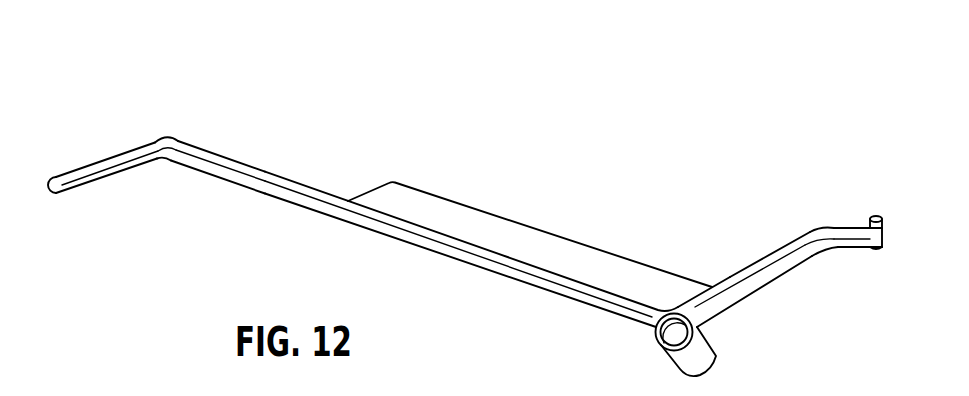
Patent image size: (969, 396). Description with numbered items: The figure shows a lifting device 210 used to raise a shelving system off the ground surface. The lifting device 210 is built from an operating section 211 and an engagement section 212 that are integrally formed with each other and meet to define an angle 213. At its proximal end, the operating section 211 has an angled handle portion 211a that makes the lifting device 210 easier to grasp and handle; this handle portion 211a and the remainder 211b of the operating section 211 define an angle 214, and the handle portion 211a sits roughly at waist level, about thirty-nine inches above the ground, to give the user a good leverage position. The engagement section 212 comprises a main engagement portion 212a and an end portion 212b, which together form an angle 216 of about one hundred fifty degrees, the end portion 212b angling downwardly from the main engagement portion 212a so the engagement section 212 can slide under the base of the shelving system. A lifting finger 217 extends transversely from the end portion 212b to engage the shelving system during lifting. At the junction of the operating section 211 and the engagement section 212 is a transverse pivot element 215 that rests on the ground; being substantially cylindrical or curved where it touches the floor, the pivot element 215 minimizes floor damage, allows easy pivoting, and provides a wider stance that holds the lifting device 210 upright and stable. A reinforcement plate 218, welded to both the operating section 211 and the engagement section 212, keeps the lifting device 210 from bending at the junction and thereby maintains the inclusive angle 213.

The lifting device 210 is at (383, 274).
The operating section 211 is at (156, 150).
The handle portion 211a is at (95, 163).
The remainder of the operating section 211b is at (261, 170).
The engagement section 212 is at (788, 222).
The main engagement portion 212a is at (755, 270).
The end portion 212b is at (845, 233).
The angle 213 is at (711, 270).
The angle 214 is at (170, 170).
The pivot element 215 is at (693, 357).
The angle 216 is at (835, 259).
The lifting finger 217 is at (878, 244).
The reinforcement plate 218 is at (442, 213).